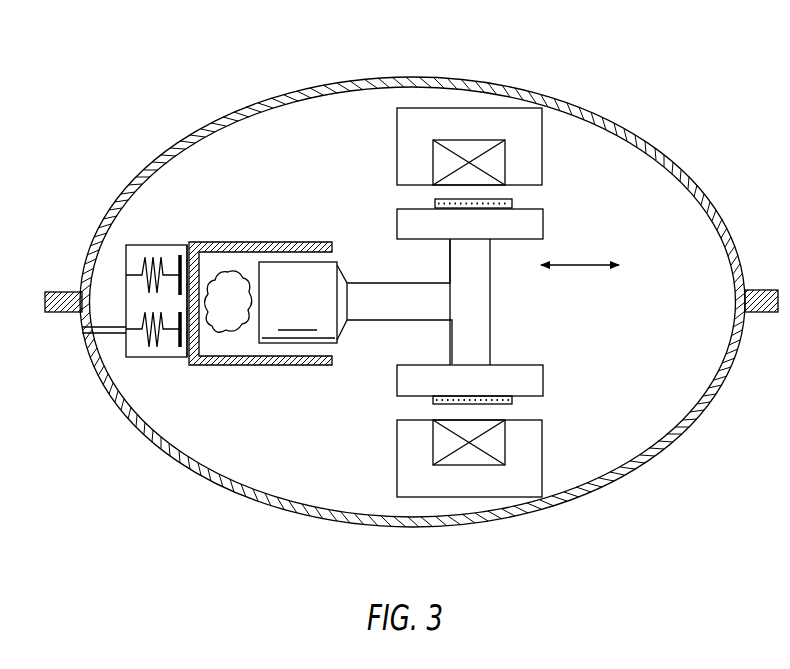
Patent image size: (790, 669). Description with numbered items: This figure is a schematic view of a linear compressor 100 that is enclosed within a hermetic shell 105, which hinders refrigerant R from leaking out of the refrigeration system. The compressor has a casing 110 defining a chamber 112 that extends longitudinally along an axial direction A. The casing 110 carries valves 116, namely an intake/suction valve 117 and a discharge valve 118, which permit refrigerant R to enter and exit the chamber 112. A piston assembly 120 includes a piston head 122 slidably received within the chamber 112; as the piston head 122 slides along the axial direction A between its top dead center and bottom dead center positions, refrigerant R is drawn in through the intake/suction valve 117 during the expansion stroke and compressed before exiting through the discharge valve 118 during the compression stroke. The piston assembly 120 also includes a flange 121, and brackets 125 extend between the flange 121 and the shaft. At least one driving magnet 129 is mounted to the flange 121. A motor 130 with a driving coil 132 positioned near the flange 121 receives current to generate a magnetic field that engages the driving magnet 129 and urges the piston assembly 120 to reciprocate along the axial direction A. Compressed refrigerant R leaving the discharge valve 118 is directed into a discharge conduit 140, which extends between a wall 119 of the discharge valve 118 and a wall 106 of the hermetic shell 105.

The linear compressor 100 is at (158, 124).
The hermetic shell 105 is at (645, 143).
The wall of hermetic shell 106 is at (118, 413).
The casing 110 is at (285, 242).
The chamber 112 is at (222, 337).
The valves 116 is at (171, 242).
The intake/suction valve 117 is at (137, 274).
The discharge valve 118 is at (136, 334).
The wall of discharge valve 119 is at (175, 357).
The piston assembly 120 is at (362, 325).
The flange 121 is at (545, 226).
The piston head 122 is at (288, 318).
The brackets 125 is at (463, 263).
The driving magnet 129 is at (433, 204).
The motor 130 is at (416, 100).
The driving coil 132 is at (470, 147).
The discharge conduit 140 is at (95, 340).
The refrigerant R is at (235, 280).
The axial direction A is at (589, 264).